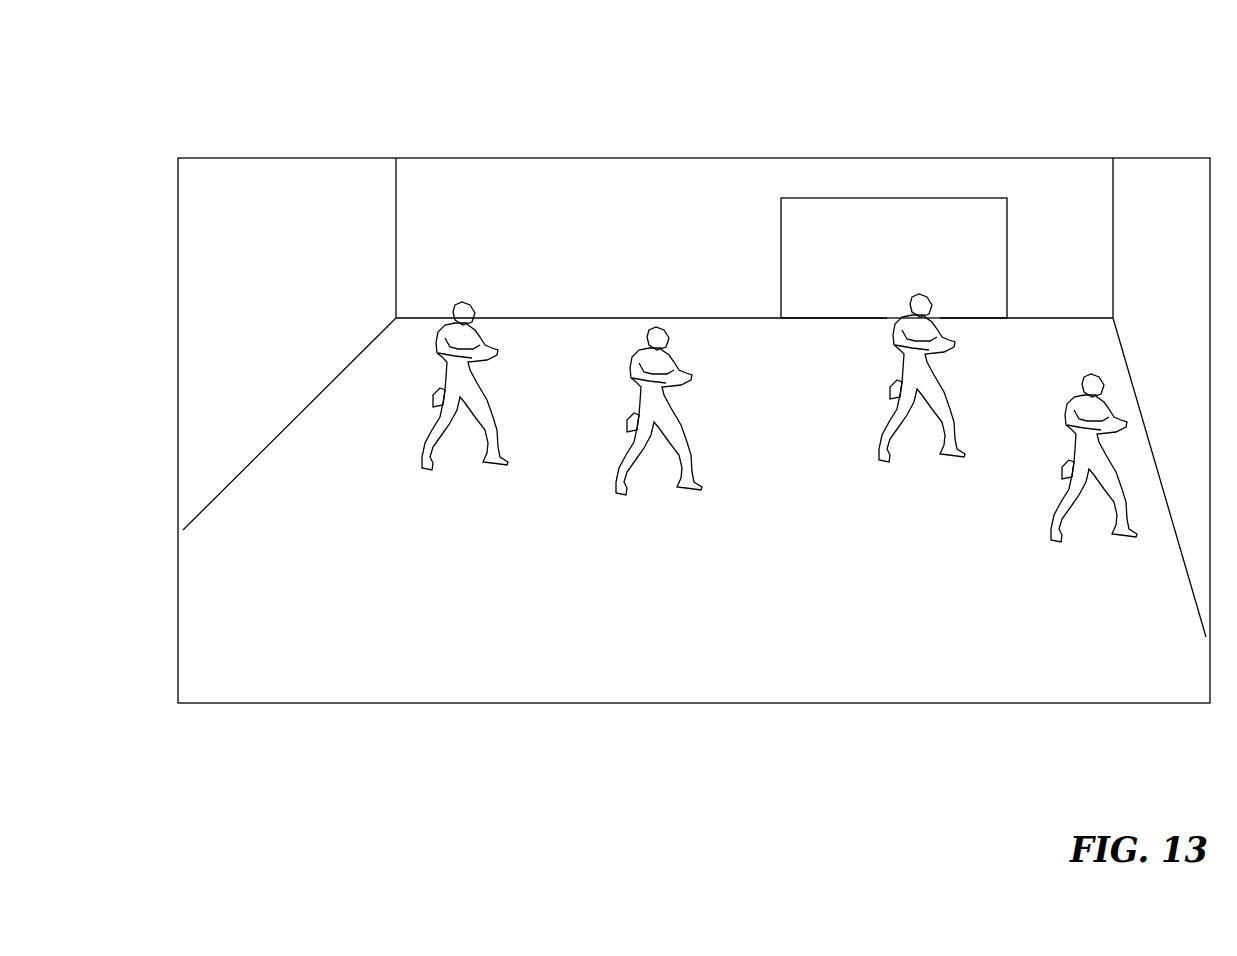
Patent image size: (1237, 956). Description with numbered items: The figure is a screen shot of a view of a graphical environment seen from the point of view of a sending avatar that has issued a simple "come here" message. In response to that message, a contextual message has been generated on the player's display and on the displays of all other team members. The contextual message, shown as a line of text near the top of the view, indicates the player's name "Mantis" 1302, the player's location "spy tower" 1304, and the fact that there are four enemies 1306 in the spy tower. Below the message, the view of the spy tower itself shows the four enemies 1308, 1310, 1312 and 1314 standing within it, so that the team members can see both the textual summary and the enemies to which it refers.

The player's name 1302 is at (238, 222).
The player's location 1304 is at (382, 222).
The enemy count 1306 is at (475, 210).
The enemy 1308 is at (453, 478).
The enemy 1310 is at (652, 503).
The enemy 1312 is at (882, 478).
The enemy 1314 is at (1053, 573).